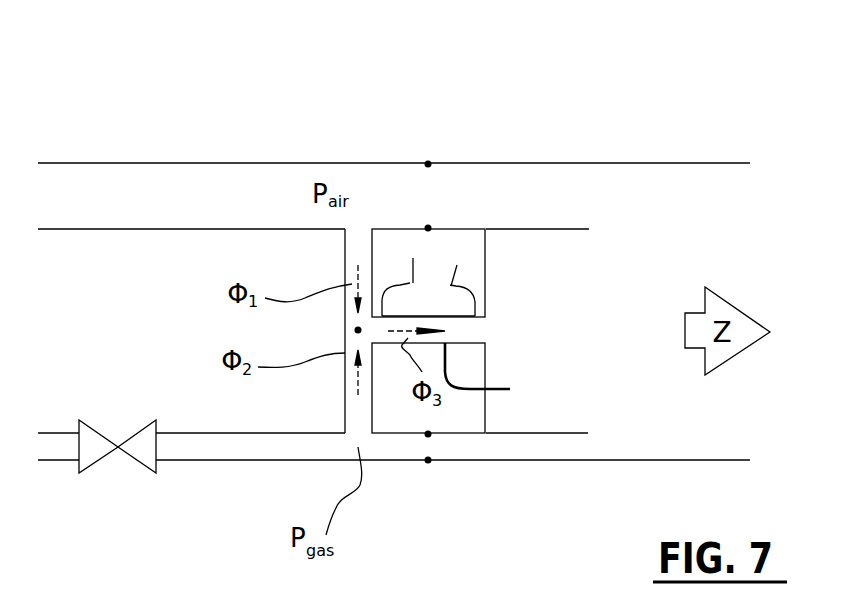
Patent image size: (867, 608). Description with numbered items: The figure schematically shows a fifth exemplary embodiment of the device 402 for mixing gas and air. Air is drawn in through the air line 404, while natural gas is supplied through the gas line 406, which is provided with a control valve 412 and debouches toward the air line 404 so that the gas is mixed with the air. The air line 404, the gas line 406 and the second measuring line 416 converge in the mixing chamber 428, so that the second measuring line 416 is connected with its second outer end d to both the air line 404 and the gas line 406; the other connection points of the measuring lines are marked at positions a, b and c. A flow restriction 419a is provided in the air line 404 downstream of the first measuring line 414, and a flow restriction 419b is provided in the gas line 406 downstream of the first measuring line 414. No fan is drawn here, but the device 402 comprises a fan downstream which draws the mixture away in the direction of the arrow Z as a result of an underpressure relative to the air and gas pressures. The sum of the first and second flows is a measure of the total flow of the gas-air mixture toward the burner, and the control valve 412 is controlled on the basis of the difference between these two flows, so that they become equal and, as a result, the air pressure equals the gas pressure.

The device 402 is at (529, 114).
The air line 404 is at (403, 163).
The gas line 406 is at (495, 462).
The control valve 412 is at (95, 450).
The first measuring line 414 is at (305, 330).
The second measuring line 416 is at (496, 370).
The flow restriction 419a is at (428, 163).
The flow restriction 419b is at (428, 461).
The mixing chamber 428 is at (580, 343).
The position a is at (345, 246).
The position b is at (345, 420).
The position c is at (409, 258).
The second outer end d is at (460, 260).